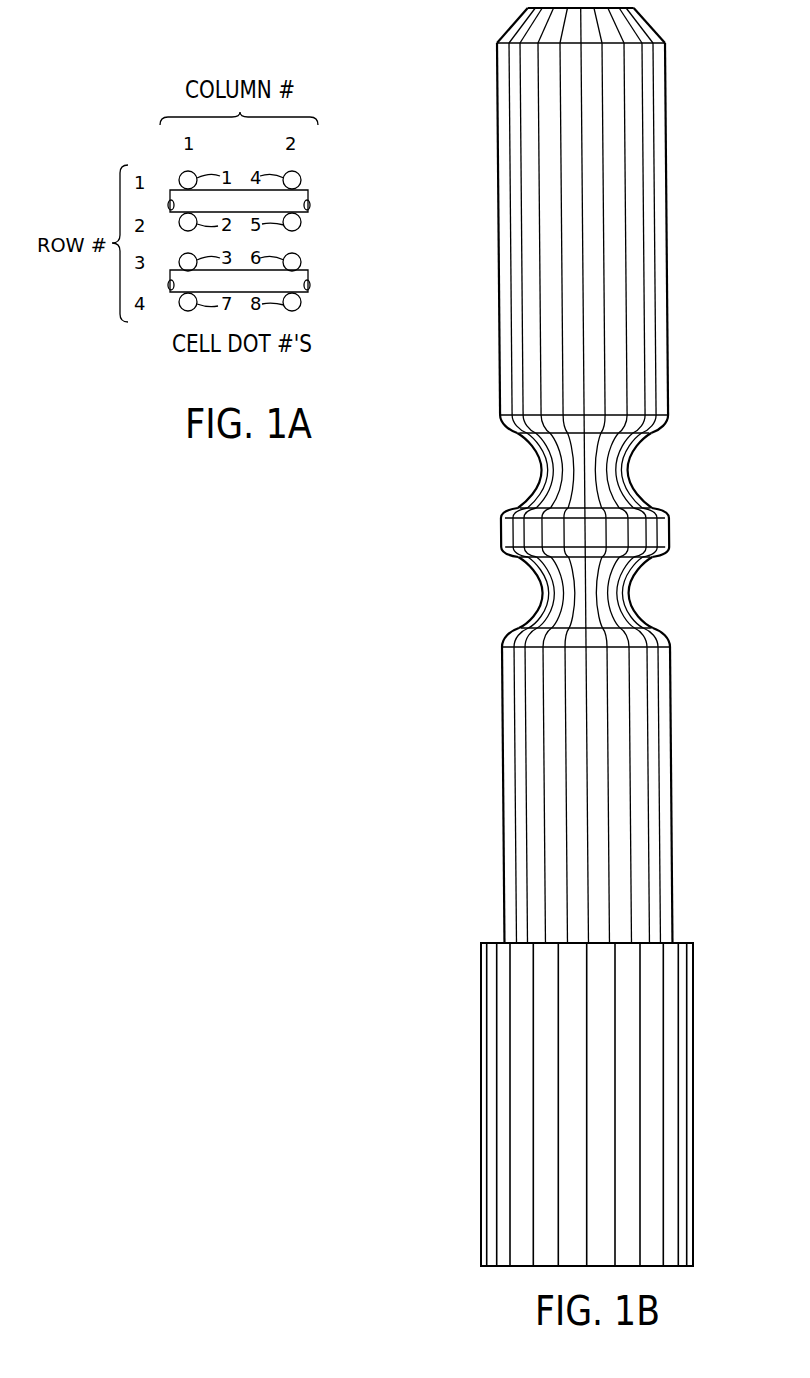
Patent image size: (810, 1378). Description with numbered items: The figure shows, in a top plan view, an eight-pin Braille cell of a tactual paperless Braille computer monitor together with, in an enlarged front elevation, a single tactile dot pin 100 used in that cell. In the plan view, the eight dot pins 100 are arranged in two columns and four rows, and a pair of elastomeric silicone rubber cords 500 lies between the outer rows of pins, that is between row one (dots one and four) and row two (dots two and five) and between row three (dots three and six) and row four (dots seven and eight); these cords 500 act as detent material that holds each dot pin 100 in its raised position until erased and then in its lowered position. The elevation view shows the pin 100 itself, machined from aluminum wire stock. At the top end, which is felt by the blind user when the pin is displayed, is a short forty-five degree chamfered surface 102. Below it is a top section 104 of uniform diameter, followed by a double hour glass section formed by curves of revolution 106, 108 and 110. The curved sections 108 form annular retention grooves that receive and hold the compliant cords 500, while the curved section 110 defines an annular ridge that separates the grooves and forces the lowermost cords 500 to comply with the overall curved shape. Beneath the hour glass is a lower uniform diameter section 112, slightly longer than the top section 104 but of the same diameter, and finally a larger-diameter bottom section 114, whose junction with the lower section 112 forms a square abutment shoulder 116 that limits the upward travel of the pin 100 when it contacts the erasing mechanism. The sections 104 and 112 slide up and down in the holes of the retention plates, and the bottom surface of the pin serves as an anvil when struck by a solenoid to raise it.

In FIG. 1A, the dot pin 100 is at (299, 177).
In FIG. 1B, the dot pin 100 is at (559, 635).
In FIG. 1A, the silicone rubber cord 500 is at (310, 205).
In FIG. 1B, the chamfered surface 102 is at (650, 26).
In FIG. 1B, the top section 104 is at (668, 162).
In FIG. 1B, the curve of revolution 106 is at (663, 423).
In FIG. 1B, the curved section 108 is at (627, 473).
In FIG. 1B, the curved section 110 is at (665, 527).
In FIG. 1B, the lower uniform diameter section 112 is at (672, 772).
In FIG. 1B, the bottom uniform diameter section 114 is at (695, 1110).
In FIG. 1B, the square abutment shoulder 116 is at (682, 941).